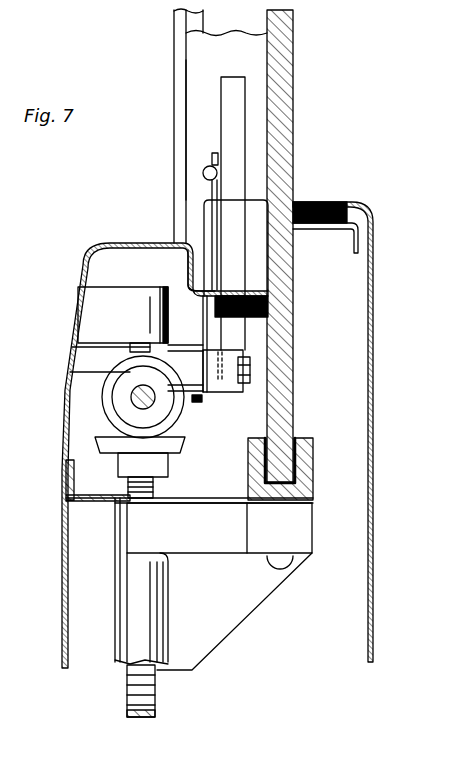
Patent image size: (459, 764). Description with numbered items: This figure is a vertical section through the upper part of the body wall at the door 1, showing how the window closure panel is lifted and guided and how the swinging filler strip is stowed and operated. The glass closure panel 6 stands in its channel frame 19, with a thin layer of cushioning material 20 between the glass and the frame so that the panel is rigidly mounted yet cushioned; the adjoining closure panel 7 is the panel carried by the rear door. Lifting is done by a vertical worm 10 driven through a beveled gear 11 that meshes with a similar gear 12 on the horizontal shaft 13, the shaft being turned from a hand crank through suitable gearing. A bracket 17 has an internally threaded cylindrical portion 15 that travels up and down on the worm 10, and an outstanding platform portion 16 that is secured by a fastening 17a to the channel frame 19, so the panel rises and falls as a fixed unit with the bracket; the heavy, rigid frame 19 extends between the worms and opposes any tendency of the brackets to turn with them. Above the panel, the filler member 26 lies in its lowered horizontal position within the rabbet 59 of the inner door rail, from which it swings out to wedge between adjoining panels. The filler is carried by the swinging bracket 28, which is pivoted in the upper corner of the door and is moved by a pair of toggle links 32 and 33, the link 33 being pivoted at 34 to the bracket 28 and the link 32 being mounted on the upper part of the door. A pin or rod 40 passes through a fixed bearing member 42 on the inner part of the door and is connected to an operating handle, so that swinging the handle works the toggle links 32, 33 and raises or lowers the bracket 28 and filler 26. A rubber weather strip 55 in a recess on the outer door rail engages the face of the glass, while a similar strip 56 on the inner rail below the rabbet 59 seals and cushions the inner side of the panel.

The door 1 is at (371, 274).
The closure panel 6 is at (293, 22).
The closure panel 7 is at (185, 20).
The vertical worm 10 is at (156, 697).
The beveled gear 11 is at (153, 466).
The beveled gear 12 is at (122, 362).
The horizontal shaft 13 is at (130, 397).
The internally threaded cylindrical portion 15 is at (120, 610).
The platform portion 16 is at (204, 545).
The bracket 17 is at (262, 620).
The fastening 17a is at (298, 562).
The channel frame 19 is at (313, 476).
The cushioning material 20 is at (300, 447).
The filler member 26 is at (198, 57).
The swinging bracket 28 is at (228, 97).
The toggle link 32 is at (209, 312).
The toggle link 33 is at (213, 210).
The pivot 34 is at (204, 175).
The pin or rod 40 is at (250, 388).
The fixed bearing member 42 is at (196, 402).
The rubber weather strip 55 is at (303, 227).
The weather strip 56 is at (262, 318).
The rabbet 59 is at (200, 250).